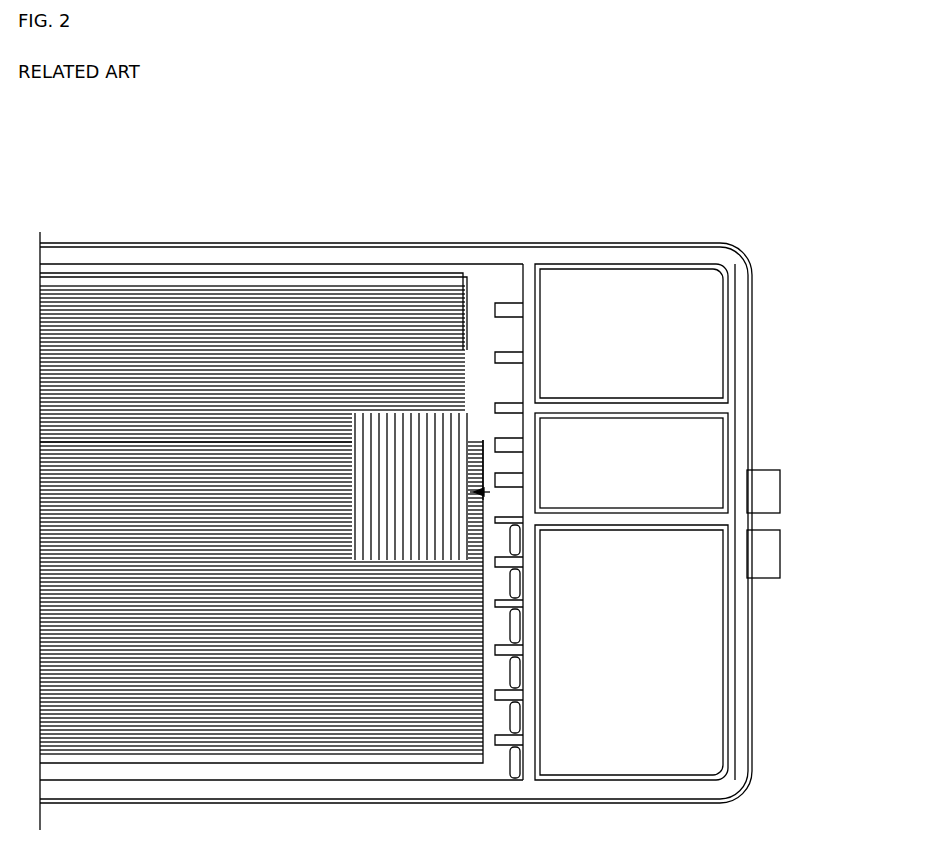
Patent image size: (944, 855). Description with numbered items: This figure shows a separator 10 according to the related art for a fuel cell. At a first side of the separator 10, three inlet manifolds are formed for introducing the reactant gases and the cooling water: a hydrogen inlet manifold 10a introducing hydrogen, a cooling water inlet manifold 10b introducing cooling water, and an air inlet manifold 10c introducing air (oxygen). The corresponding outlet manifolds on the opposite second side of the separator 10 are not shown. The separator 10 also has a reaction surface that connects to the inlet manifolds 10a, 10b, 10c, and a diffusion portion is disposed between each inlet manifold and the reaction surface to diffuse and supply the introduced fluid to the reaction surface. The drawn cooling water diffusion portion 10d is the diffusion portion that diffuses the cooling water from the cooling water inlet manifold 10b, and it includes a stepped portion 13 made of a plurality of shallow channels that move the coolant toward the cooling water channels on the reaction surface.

The separator 10 is at (369, 230).
The cooling water diffusion portion 10d is at (470, 490).
The hydrogen inlet manifold 10a is at (692, 340).
The cooling water inlet manifold 10b is at (705, 487).
The air inlet manifold 10c is at (690, 665).
The stepped portion 13 is at (490, 492).